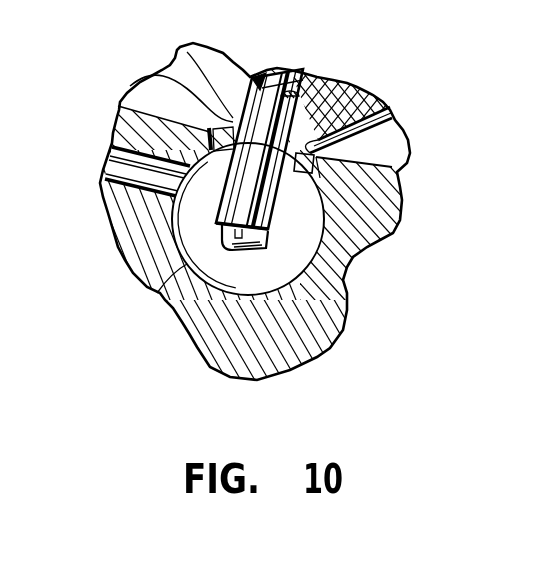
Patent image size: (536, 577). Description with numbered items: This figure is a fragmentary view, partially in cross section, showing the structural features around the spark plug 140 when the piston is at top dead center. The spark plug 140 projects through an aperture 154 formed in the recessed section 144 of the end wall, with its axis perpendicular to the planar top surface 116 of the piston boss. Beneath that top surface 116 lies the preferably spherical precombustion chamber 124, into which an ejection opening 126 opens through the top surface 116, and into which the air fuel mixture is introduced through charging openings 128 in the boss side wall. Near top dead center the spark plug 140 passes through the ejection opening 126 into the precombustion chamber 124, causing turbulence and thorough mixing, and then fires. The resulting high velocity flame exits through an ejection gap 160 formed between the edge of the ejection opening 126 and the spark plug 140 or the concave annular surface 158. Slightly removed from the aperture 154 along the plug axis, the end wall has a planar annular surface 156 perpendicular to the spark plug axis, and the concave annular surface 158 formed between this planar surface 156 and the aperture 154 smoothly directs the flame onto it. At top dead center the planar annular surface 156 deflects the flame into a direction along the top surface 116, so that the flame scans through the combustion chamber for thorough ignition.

The planar top surface 116 is at (410, 158).
The precombustion chamber 124 is at (160, 293).
The ejection opening 126 is at (320, 147).
The charging openings 128 is at (120, 170).
The spark plug 140 is at (248, 256).
The recessed section 144 is at (177, 48).
The aperture 154 is at (279, 190).
The planar annular surface 156 is at (155, 74).
The concave annular surface 158 is at (130, 93).
The ejection gap 160 is at (390, 108).